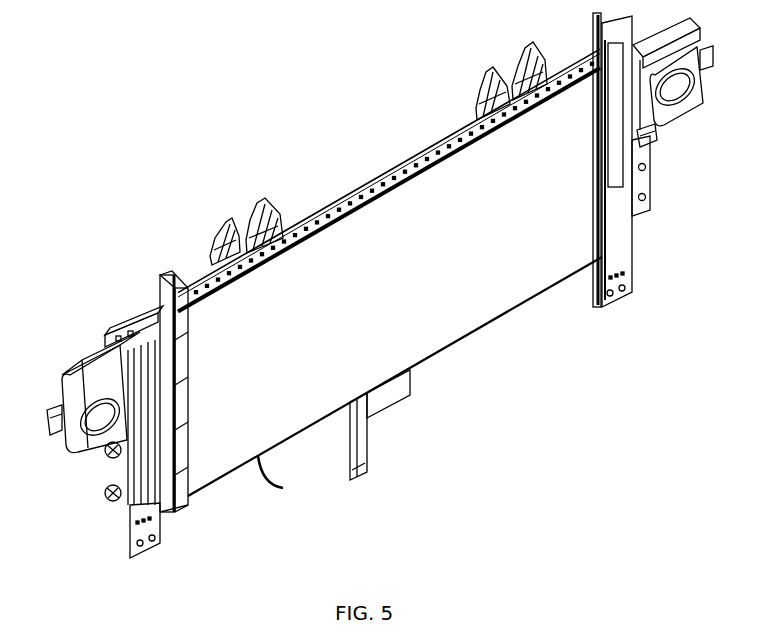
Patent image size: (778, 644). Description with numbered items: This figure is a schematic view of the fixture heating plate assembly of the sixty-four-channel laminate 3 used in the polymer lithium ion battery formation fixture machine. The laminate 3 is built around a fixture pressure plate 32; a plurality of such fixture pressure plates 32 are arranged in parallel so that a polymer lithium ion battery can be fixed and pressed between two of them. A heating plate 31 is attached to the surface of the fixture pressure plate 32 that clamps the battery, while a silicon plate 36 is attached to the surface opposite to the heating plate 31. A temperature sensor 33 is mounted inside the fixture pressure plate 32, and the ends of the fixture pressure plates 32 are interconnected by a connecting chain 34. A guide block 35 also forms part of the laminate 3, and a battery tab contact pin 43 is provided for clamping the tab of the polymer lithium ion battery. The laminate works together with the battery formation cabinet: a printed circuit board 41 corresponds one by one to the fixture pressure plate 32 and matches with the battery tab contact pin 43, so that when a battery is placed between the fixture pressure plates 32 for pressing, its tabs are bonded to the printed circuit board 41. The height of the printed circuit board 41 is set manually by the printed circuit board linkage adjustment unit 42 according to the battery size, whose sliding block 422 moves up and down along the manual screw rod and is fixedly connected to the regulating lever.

The 64-channel laminate 3 is at (330, 208).
The heating plate 31 is at (386, 395).
The fixture pressure plate 32 is at (183, 415).
The temperature sensor 33 is at (500, 320).
The connecting chain 34 is at (55, 420).
The guide block 35 is at (520, 70).
The silicon plate 36 is at (493, 273).
The printed circuit board 41 is at (647, 147).
The printed circuit board linkage adjustment unit 42 is at (130, 461).
The battery tab contact pin 43 is at (164, 473).
The sliding block 422 is at (603, 347).